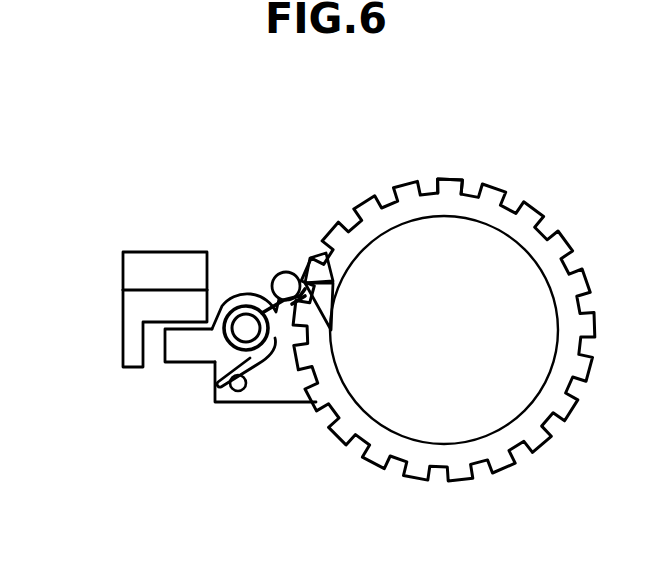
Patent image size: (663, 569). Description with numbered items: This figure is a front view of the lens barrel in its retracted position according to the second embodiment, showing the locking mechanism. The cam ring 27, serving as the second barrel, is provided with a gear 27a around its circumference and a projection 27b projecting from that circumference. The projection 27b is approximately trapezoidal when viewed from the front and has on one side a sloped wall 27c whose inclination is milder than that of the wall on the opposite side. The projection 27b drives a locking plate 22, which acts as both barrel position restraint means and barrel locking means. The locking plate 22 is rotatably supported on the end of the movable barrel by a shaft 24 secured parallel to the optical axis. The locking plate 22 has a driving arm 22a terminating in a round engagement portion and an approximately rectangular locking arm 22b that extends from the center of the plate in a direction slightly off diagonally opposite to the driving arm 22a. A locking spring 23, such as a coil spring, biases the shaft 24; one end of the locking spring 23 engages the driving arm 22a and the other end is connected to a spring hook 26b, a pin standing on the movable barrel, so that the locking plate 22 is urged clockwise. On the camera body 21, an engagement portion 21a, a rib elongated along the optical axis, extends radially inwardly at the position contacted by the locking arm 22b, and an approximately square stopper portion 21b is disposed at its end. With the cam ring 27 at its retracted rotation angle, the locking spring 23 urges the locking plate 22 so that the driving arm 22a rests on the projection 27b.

The camera body 21 is at (120, 274).
The engagement portion 21a is at (157, 302).
The stopper portion 21b is at (160, 260).
The locking plate 22 is at (216, 314).
The driving arm 22a is at (286, 272).
The locking arm 22b is at (177, 356).
The locking spring 23 is at (257, 284).
The shaft 24 is at (243, 323).
The spring hook 26b is at (244, 391).
The cam ring 27 is at (405, 295).
The gear 27a is at (408, 180).
The projection 27b is at (320, 256).
The sloped wall 27c is at (318, 287).